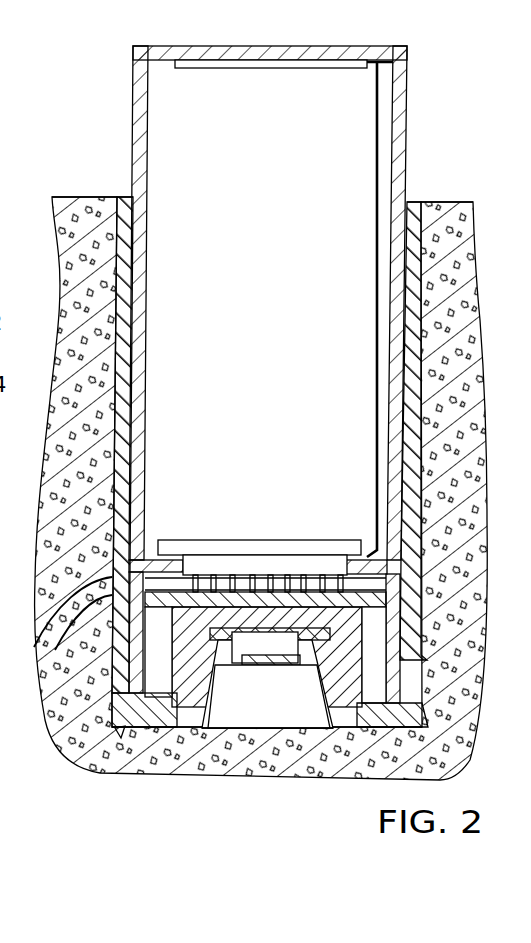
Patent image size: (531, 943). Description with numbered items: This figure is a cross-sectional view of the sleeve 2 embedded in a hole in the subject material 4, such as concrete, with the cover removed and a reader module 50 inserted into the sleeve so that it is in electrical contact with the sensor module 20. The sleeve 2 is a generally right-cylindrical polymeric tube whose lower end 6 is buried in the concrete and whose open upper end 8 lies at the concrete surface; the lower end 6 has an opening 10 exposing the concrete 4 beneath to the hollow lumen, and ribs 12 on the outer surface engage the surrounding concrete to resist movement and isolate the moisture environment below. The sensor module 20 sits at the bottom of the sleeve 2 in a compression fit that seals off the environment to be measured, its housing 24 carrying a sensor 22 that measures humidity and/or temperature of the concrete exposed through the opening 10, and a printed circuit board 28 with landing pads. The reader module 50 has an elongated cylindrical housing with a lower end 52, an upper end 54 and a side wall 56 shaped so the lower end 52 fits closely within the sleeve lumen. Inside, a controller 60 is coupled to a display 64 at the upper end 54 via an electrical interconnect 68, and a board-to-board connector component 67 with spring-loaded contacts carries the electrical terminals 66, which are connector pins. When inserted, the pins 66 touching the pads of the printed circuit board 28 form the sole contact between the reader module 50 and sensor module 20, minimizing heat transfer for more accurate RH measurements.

The sleeve 2 is at (111, 530).
The subject material 4 is at (70, 456).
The lower end 6 is at (150, 730).
The open upper end 8 is at (412, 202).
The opening 10 is at (240, 712).
The ribs 12 is at (120, 735).
The sensor module 20 is at (268, 704).
The sensor 22 is at (278, 668).
The housing 24 is at (181, 728).
The printed circuit board 28 is at (392, 612).
The reader module 50 is at (231, 362).
The lower end 52 is at (392, 581).
The upper end 54 is at (152, 46).
The side wall 56 is at (133, 157).
The controller 60 is at (208, 545).
The display 64 is at (280, 66).
The electrical terminals 66 is at (270, 583).
The board-to-board connector component 67 is at (318, 565).
The electrical interconnect 68 is at (377, 318).